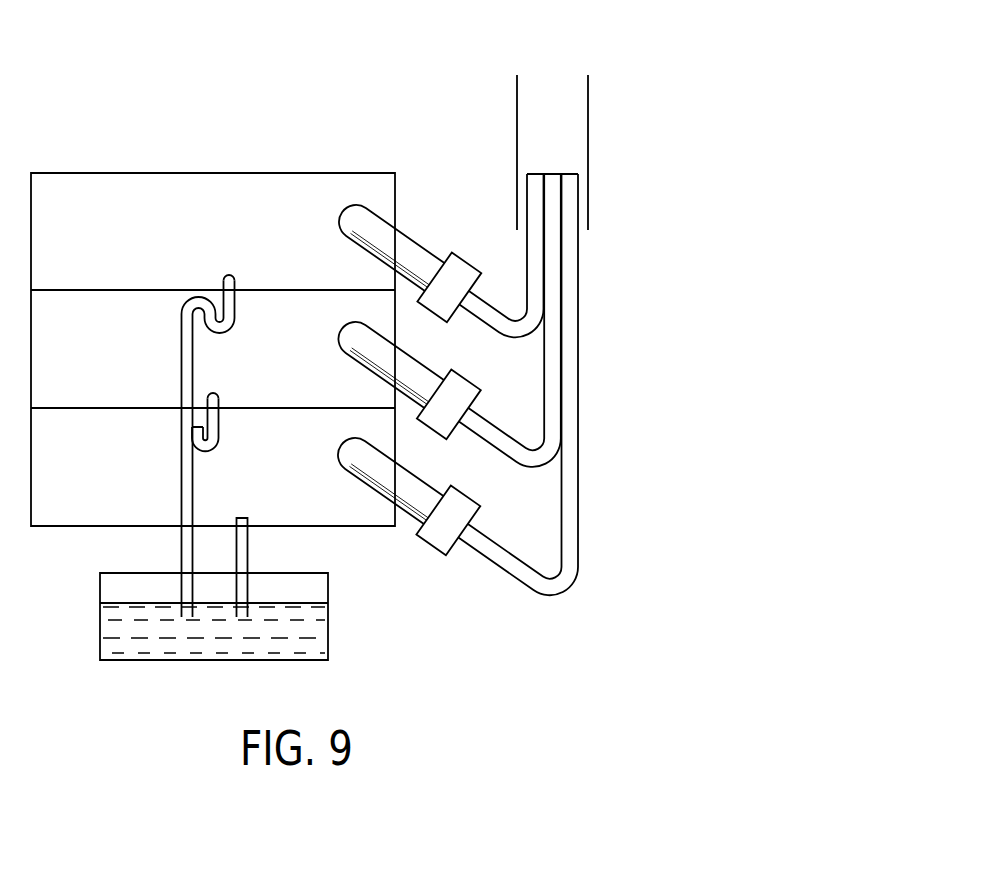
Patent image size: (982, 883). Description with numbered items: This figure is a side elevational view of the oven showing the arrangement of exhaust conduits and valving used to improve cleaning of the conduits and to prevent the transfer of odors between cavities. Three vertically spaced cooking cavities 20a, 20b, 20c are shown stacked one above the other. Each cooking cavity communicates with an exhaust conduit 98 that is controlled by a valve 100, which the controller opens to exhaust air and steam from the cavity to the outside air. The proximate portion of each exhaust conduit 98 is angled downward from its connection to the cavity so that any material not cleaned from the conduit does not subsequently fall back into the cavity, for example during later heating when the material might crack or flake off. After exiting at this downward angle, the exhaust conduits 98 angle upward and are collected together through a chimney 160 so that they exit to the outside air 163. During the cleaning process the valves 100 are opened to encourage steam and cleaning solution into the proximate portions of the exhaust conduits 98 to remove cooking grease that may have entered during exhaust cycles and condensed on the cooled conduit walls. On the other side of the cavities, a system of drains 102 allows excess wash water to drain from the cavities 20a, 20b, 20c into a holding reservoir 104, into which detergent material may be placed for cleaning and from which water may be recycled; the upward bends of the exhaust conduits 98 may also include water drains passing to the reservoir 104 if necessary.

The cooking cavity 20a is at (112, 246).
The cooking cavity 20b is at (112, 363).
The cooking cavity 20c is at (112, 483).
The exhaust conduit 98 is at (352, 237).
The valve 100 is at (465, 272).
The drain 102 is at (241, 279).
The holding reservoir 104 is at (260, 650).
The chimney 160 is at (588, 113).
The outside air 163 is at (663, 33).